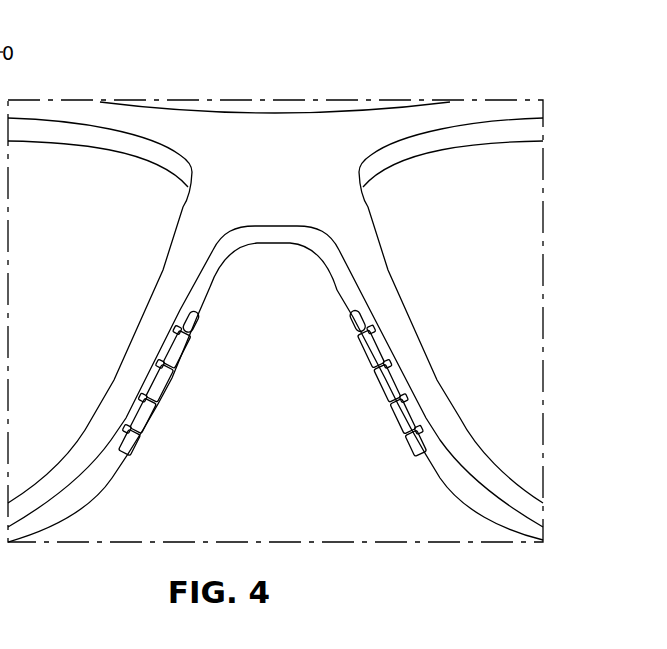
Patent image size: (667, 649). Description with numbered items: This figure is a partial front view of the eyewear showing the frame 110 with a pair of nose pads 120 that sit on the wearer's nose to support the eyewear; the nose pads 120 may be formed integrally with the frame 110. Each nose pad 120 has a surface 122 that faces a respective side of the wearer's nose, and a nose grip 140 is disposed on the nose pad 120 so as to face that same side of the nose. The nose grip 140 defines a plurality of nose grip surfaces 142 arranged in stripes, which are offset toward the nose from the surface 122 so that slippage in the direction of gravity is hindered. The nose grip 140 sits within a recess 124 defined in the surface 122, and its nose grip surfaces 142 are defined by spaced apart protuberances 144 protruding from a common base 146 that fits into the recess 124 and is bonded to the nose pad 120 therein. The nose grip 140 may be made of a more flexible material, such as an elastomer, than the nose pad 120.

The frame 110 is at (275, 132).
The nose pad 120 is at (157, 318).
The surface 122 is at (113, 463).
The recess 124 is at (424, 450).
The nose grip 140 is at (417, 462).
The nose grip surface 142 is at (172, 382).
The protuberance 144 is at (385, 382).
The common base 146 is at (152, 377).